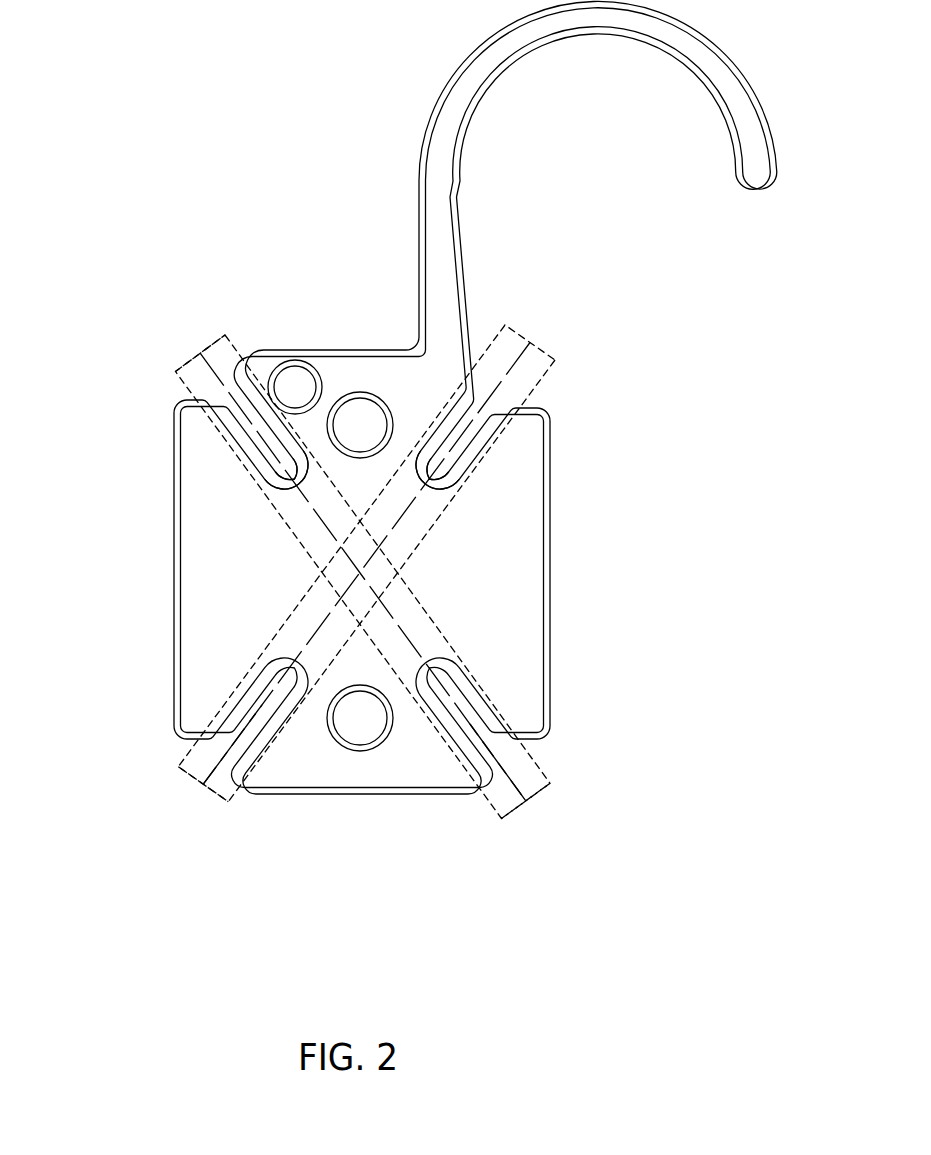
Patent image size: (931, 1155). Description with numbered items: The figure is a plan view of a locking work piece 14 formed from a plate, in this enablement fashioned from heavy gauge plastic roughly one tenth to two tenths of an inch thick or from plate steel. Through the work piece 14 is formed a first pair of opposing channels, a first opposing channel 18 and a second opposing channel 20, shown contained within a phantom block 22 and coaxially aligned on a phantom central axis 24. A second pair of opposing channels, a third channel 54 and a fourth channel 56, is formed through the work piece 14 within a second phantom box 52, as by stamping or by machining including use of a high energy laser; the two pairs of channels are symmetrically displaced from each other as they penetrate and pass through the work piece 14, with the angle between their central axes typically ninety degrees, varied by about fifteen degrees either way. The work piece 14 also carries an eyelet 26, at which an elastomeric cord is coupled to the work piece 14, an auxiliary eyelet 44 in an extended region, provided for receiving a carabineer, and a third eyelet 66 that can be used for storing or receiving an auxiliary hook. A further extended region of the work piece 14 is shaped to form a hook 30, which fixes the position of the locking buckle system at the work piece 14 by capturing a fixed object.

The locking work piece 14 is at (477, 594).
The first opposing channel 18 is at (316, 452).
The second opposing channel 20 is at (470, 715).
The phantom block 22 is at (235, 341).
The phantom central axis 24 is at (201, 355).
The eyelet 26 is at (360, 718).
The hook 30 is at (456, 157).
The auxiliary eyelet 44 is at (295, 387).
The second phantom box 52 is at (537, 349).
The third channel 54 is at (462, 446).
The fourth channel 56 is at (248, 720).
The third eyelet 66 is at (360, 425).